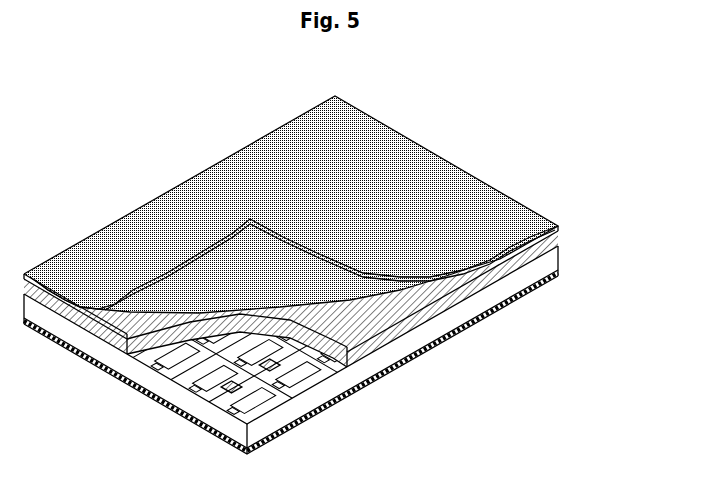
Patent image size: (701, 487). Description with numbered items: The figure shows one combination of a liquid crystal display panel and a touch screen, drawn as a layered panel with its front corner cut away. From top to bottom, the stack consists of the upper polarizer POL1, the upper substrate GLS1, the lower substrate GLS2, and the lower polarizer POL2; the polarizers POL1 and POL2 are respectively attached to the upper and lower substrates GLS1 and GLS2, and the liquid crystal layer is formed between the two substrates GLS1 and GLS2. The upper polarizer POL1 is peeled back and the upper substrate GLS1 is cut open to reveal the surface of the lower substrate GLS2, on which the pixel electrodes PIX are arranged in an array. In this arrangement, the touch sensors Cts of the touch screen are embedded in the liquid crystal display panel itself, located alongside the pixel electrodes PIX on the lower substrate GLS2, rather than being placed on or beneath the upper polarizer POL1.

The upper polarizer POL1 is at (560, 226).
The upper substrate GLS1 is at (557, 238).
The lower substrate GLS2 is at (552, 258).
The lower polarizer POL2 is at (558, 276).
The touch sensors Cts is at (212, 392).
The pixel electrodes PIX is at (240, 412).